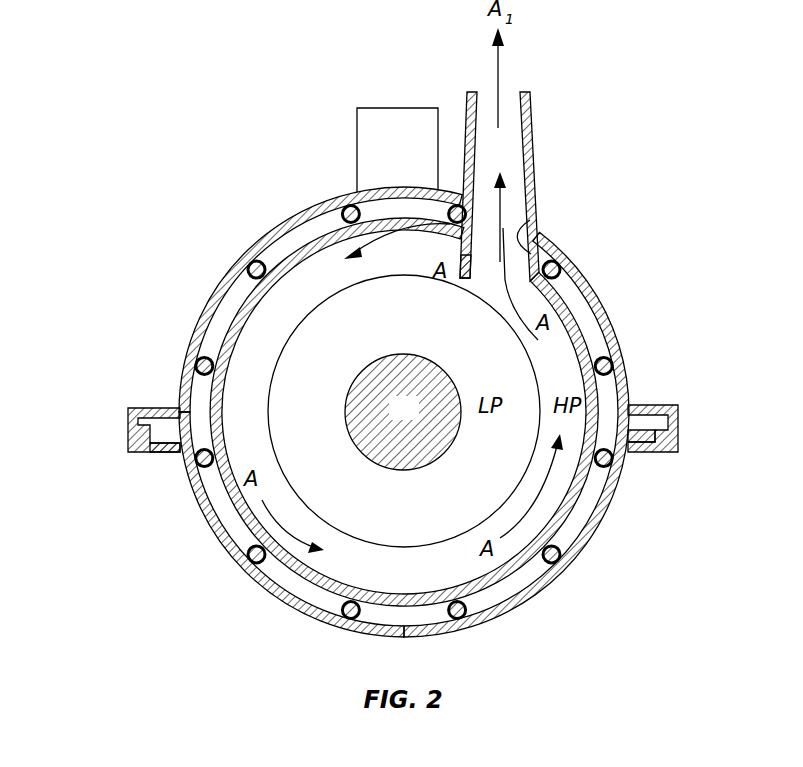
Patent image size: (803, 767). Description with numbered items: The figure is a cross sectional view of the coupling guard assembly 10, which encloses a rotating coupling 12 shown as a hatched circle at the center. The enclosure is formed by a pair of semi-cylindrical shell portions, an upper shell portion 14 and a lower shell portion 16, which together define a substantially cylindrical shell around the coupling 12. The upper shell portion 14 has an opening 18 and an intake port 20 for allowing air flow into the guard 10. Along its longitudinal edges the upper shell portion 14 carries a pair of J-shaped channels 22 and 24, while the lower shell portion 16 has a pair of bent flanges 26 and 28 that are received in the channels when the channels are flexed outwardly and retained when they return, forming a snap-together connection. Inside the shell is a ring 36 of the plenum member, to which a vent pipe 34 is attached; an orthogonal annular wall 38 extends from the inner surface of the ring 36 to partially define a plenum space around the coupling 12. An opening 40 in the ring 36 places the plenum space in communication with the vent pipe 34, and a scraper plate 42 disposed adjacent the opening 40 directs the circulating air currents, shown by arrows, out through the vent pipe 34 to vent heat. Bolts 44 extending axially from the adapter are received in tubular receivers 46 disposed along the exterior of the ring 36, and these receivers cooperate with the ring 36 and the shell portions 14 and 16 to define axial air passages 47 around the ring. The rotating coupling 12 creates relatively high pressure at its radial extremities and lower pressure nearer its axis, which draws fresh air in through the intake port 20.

The coupling guard assembly 10 is at (143, 168).
The rotating coupling 12 is at (403, 412).
The upper shell portion 14 is at (205, 308).
The lower shell portion 16 is at (208, 535).
The opening 18 is at (463, 187).
The intake port 20 is at (397, 150).
The J-shaped channel 22 is at (678, 405).
The J-shaped channel 24 is at (128, 408).
The bent flange 26 is at (642, 433).
The bent flange 28 is at (160, 446).
The vent pipe 34 is at (534, 142).
The ring 36 is at (290, 252).
The orthogonal annular wall 38 is at (402, 411).
The opening 40 is at (540, 197).
The scraper plate 42 is at (462, 273).
The bolts 44 is at (197, 368).
The tubular receivers 46 is at (208, 488).
The axial air passages 47 is at (600, 325).